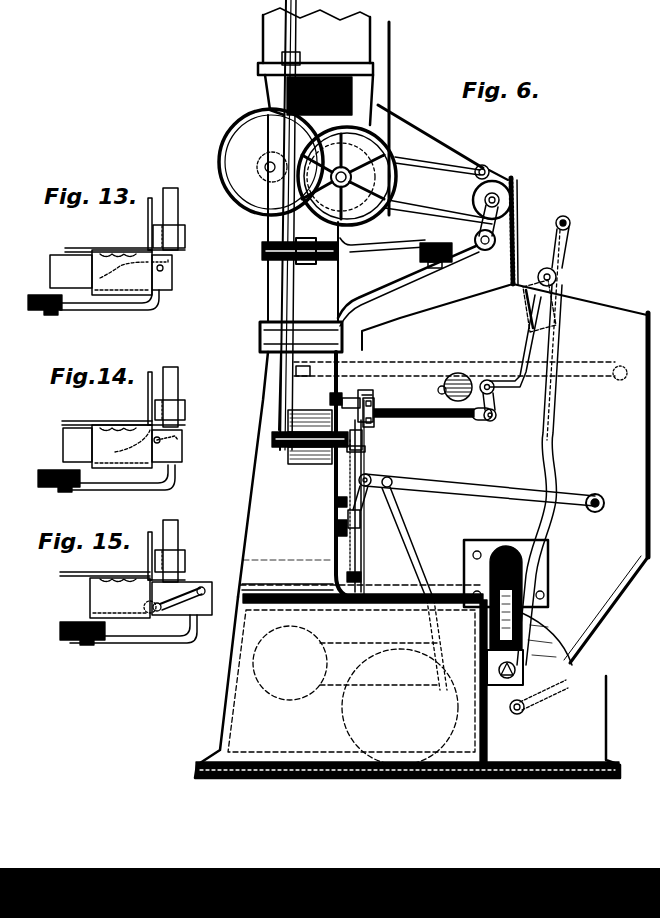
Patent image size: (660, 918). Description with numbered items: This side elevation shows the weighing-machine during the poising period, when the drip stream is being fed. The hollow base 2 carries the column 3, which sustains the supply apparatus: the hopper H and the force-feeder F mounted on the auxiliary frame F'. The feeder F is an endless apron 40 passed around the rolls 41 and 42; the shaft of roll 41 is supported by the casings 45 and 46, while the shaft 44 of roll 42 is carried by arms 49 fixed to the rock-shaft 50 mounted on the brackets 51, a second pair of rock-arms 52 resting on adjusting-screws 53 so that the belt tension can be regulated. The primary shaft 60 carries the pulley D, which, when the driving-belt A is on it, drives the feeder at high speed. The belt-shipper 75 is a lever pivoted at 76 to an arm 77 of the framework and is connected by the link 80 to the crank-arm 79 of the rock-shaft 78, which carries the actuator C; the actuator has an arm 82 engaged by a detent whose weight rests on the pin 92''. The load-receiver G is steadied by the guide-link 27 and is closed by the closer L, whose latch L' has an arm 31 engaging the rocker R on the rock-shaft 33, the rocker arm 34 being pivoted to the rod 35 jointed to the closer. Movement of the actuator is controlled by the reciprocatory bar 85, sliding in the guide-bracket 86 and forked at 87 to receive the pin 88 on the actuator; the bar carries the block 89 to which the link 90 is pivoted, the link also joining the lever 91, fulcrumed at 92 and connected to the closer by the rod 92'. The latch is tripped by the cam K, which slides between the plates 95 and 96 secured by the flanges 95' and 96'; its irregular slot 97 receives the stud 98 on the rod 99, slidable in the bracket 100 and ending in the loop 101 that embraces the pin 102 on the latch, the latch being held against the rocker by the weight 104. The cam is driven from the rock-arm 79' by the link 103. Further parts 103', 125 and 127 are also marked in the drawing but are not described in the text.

In FIG. 6, the chambered or hollow base 2 is at (596, 670).
In FIG. 6, the column or upright 3 is at (286, 535).
In FIG. 6, the driving-belt A is at (391, 27).
In FIG. 6, the supply chute or hopper H is at (358, 88).
In FIG. 6, the actuator C is at (279, 382).
In FIG. 6, the pulley D is at (392, 150).
In FIG. 6, the force-feeder F is at (438, 202).
In FIG. 6, the auxiliary frame F' is at (408, 286).
In FIG. 6, the rocker R is at (563, 300).
In FIG. 6, the load-receiver G is at (606, 488).
In FIG. 6, the closer L is at (539, 698).
In FIG. 6, the latch L' is at (489, 370).
In FIG. 13, the cam K is at (172, 276).
In FIG. 14, the cam K is at (182, 454).
In FIG. 15, the cam K is at (185, 605).
In FIG. 6, the longitudinal guide-link 27 is at (592, 368).
In FIG. 6, the arm of the latch 31 is at (509, 380).
In FIG. 6, the rock-shaft 33 is at (556, 275).
In FIG. 6, the arm of the rocker 34 is at (566, 240).
In FIG. 6, the longitudinal rod 35 is at (556, 438).
In FIG. 6, the endless band or apron 40 is at (482, 165).
In FIG. 6, the drum or roll 41 is at (258, 164).
In FIG. 6, the drum or roll 42 is at (505, 184).
In FIG. 6, the shaft 44 is at (500, 196).
In FIG. 6, the casing 45 is at (266, 170).
In FIG. 6, the casing 46 is at (229, 126).
In FIG. 6, the arm 49 is at (496, 222).
In FIG. 6, the rock-shaft 50 is at (486, 250).
In FIG. 6, the bracket 51 is at (382, 255).
In FIG. 6, the rock-arm 52 is at (438, 243).
In FIG. 6, the adjusting-screw 53 is at (436, 268).
In FIG. 6, the primary shaft 60 is at (345, 168).
In FIG. 6, the belt-shipper 75 is at (282, 283).
In FIG. 6, the pivot 76 is at (262, 251).
In FIG. 6, the arm 77 is at (312, 262).
In FIG. 6, the rock-shaft 78 is at (272, 440).
In FIG. 6, the crank-arm 79 is at (284, 392).
In FIG. 6, the rock-arm 79' is at (322, 391).
In FIG. 13, the rock-arm 79' is at (31, 310).
In FIG. 14, the rock-arm 79' is at (40, 480).
In FIG. 15, the rock-arm 79' is at (64, 633).
In FIG. 6, the link 80 is at (300, 345).
In FIG. 6, the arm of the actuator 82 is at (338, 470).
In FIG. 6, the reciprocatory bar 85 is at (361, 548).
In FIG. 6, the guide-bracket 86 is at (361, 576).
In FIG. 6, the bifurcation 87 is at (365, 452).
In FIG. 6, the pin 88 is at (362, 438).
In FIG. 6, the block 89 is at (360, 520).
In FIG. 6, the link 90 is at (335, 500).
In FIG. 6, the lever 91 is at (484, 490).
In FIG. 6, the fulcrum 92 is at (601, 492).
In FIG. 6, the link or rod 92' is at (415, 583).
In FIG. 6, the pin 92'' is at (321, 507).
In FIG. 6, the plate 95 is at (366, 380).
In FIG. 13, the plate 95 is at (101, 260).
In FIG. 14, the plate 95 is at (94, 446).
In FIG. 15, the plate 95 is at (109, 598).
In FIG. 6, the flange 95' is at (383, 385).
In FIG. 13, the flange 95' is at (108, 238).
In FIG. 14, the flange 95' is at (107, 413).
In FIG. 15, the flange 95' is at (105, 563).
In FIG. 6, the plate 96 is at (297, 466).
In FIG. 6, the flange 96' is at (418, 412).
In FIG. 13, the longitudinal irregular slot 97 is at (165, 262).
In FIG. 14, the longitudinal irregular slot 97 is at (175, 436).
In FIG. 15, the longitudinal irregular slot 97 is at (200, 588).
In FIG. 13, the stud 98 is at (163, 268).
In FIG. 14, the stud 98 is at (152, 434).
In FIG. 15, the stud 98 is at (157, 611).
In FIG. 13, the rod 99 is at (178, 203).
In FIG. 14, the rod 99 is at (178, 376).
In FIG. 15, the rod 99 is at (178, 530).
In FIG. 13, the bracket 100 is at (185, 232).
In FIG. 14, the bracket 100 is at (185, 408).
In FIG. 15, the bracket 100 is at (185, 558).
In FIG. 6, the loop 101 is at (476, 419).
In FIG. 6, the pin 102 is at (495, 418).
In FIG. 13, the link 103 is at (109, 313).
In FIG. 14, the link 103 is at (117, 486).
In FIG. 15, the link 103 is at (133, 640).
In FIG. 6, the link 103' is at (511, 401).
In FIG. 6, the weight 104 is at (458, 373).
In FIG. 6, the tightener bar 125 is at (436, 167).
In FIG. 6, the tightener link 127 is at (492, 170).